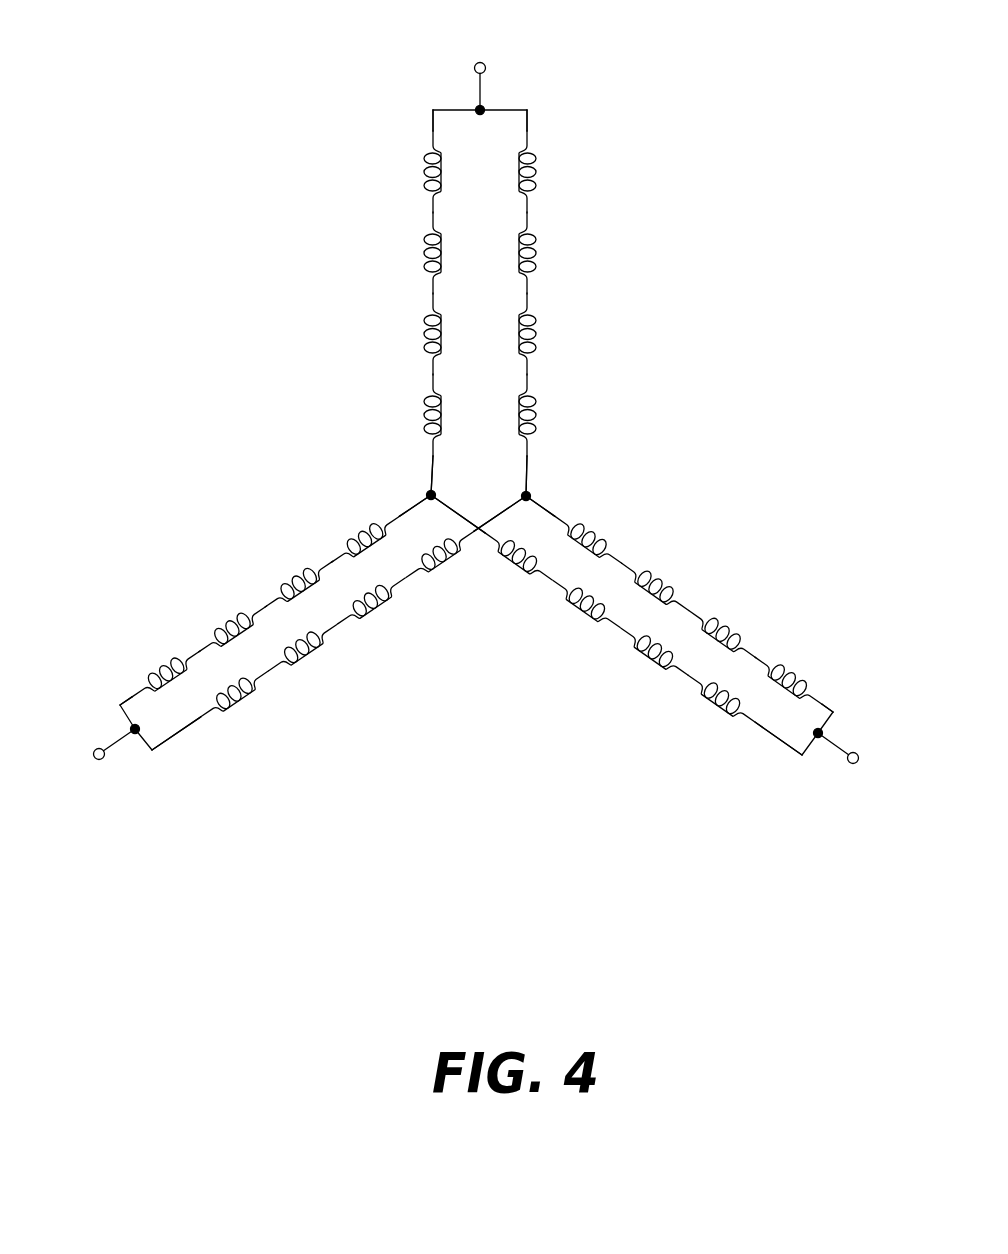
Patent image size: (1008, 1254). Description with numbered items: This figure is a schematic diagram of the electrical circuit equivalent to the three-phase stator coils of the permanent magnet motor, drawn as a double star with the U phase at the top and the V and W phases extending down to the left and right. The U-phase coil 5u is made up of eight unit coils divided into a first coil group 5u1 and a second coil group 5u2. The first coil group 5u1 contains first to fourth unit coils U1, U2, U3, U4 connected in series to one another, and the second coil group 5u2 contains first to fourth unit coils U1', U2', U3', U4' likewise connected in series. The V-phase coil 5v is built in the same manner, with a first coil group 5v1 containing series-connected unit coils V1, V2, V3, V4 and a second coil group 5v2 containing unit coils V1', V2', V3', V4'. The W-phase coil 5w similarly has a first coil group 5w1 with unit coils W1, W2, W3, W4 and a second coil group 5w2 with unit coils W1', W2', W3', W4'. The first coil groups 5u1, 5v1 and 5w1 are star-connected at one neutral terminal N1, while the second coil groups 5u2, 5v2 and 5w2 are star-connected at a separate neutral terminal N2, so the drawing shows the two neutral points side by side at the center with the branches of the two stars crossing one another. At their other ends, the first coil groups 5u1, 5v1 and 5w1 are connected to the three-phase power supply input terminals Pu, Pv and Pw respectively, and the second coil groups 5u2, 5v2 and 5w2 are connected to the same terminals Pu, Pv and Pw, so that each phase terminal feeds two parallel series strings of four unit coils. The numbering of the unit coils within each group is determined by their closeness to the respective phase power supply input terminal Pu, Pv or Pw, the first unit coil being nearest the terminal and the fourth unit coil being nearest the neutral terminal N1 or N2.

The U-phase power supply input terminal Pu is at (480, 62).
The U-phase coil 5u is at (511, 107).
The first coil group 5u1 is at (396, 286).
The second coil group 5u2 is at (560, 287).
The first unit coil U1 is at (366, 172).
The second unit coil U2 is at (364, 253).
The third unit coil U3 is at (364, 334).
The fourth unit coil U4 is at (364, 415).
The first unit coil U1' is at (604, 172).
The second unit coil U2' is at (604, 253).
The third unit coil U3' is at (604, 334).
The fourth unit coil U4' is at (604, 415).
The neutral terminal N1 is at (428, 492).
The neutral terminal N2 is at (530, 493).
The V-phase coil 5v is at (142, 746).
The first coil group 5v1 is at (258, 568).
The second coil group 5v2 is at (330, 673).
The first unit coil V1 is at (162, 659).
The second unit coil V2 is at (227, 611).
The third unit coil V3 is at (298, 562).
The fourth unit coil V4 is at (354, 525).
The first unit coil V1' is at (234, 726).
The second unit coil V2' is at (302, 676).
The third unit coil V3' is at (378, 624).
The fourth unit coil V4' is at (439, 579).
The V-phase power supply input terminal Pv is at (97, 760).
The W-phase coil 5w is at (811, 748).
The first coil group 5w1 is at (628, 686).
The second coil group 5w2 is at (702, 568).
The first unit coil W1 is at (722, 729).
The second unit coil W2 is at (654, 678).
The third unit coil W3 is at (586, 625).
The fourth unit coil W4 is at (518, 580).
The first unit coil W1' is at (809, 667).
The second unit coil W2' is at (744, 618).
The third unit coil W3' is at (655, 564).
The fourth unit coil W4' is at (600, 521).
The W-phase power supply input terminal Pw is at (855, 764).